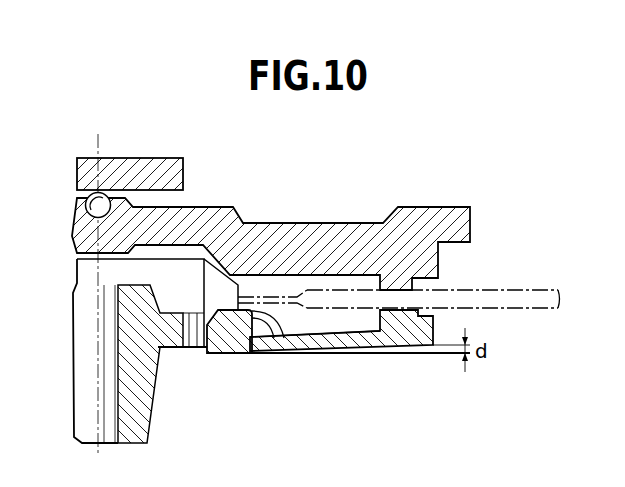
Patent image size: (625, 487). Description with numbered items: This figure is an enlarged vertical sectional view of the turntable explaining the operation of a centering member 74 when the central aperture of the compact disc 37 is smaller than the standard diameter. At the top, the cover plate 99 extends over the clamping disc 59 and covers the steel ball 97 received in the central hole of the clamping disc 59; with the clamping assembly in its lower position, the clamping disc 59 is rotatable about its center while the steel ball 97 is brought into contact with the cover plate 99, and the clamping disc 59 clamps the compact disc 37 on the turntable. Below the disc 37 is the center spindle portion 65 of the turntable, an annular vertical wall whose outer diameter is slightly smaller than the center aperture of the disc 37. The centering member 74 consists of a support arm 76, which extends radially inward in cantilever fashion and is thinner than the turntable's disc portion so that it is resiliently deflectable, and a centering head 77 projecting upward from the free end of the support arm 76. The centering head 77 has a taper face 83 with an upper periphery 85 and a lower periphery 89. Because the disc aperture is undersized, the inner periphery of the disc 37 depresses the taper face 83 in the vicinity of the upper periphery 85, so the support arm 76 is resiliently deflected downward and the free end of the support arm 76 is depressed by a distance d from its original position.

The cover plate 99 is at (155, 168).
The steel ball 97 is at (84, 204).
The clamping disc 59 is at (418, 204).
The center spindle portion 65 is at (183, 255).
The upper periphery 85 is at (235, 302).
The information carrier disc 37 is at (508, 289).
The centering head 77 is at (215, 355).
The lower periphery 89 is at (262, 356).
The taper face 83 is at (285, 342).
The support arm 76 is at (320, 342).
The centering member 74 is at (372, 357).